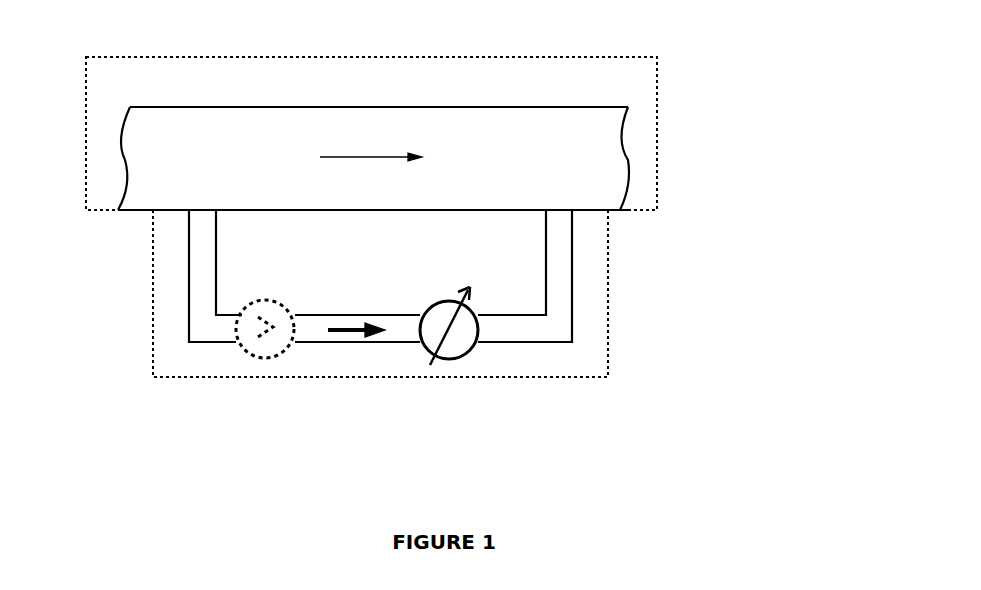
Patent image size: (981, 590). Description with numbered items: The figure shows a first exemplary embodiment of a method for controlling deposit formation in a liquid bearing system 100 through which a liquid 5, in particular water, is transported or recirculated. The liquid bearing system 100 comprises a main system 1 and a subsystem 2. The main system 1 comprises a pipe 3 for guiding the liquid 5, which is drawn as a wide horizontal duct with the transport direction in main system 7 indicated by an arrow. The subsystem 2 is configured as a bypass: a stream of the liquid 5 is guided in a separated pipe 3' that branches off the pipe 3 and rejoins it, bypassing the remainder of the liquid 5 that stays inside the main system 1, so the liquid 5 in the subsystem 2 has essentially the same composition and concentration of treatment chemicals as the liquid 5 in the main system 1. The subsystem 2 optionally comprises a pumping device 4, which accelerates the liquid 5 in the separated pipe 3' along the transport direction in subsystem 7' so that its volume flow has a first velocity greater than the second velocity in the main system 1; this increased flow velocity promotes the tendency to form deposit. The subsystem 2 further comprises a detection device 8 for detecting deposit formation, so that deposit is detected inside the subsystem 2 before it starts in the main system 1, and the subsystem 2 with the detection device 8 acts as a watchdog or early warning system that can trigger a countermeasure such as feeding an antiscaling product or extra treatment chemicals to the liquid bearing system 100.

The main system 1 is at (92, 210).
The subsystem 2 is at (608, 343).
The pipe 3 is at (383, 116).
The separated pipe 3' is at (433, 329).
The pumping device 4 is at (247, 343).
The liquid 5 is at (150, 183).
The transport direction in main system 7 is at (346, 175).
The transport direction in subsystem 7' is at (356, 390).
The detection device 8 is at (453, 343).
The liquid bearing system 100 is at (722, 85).